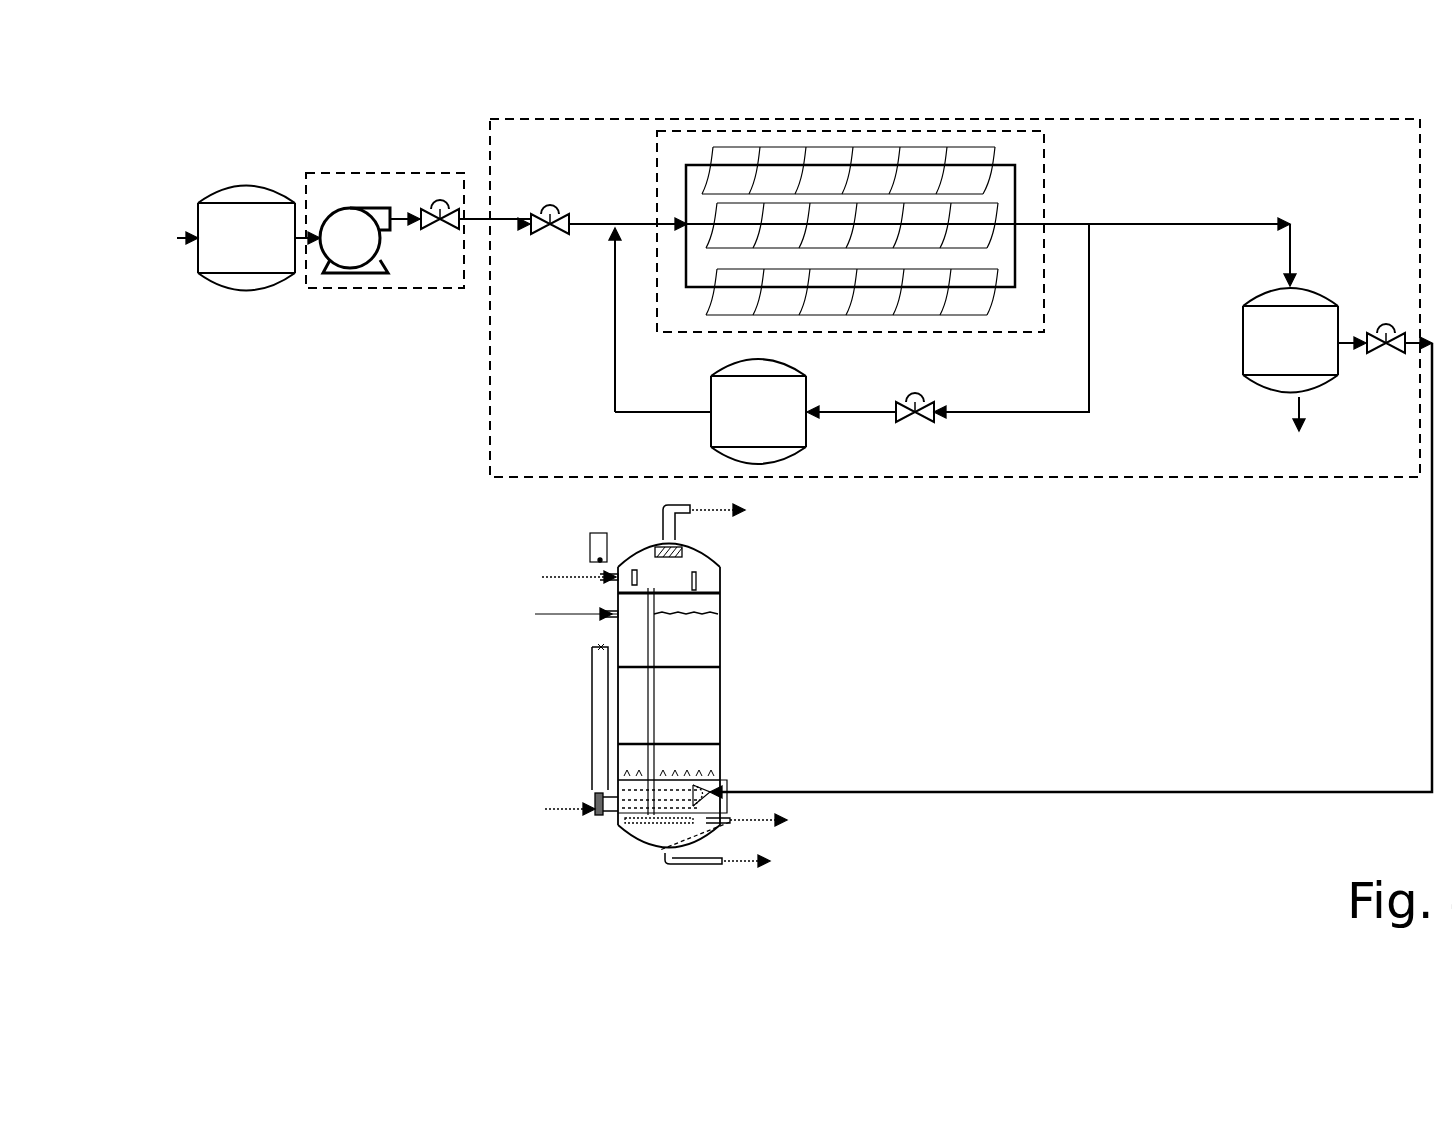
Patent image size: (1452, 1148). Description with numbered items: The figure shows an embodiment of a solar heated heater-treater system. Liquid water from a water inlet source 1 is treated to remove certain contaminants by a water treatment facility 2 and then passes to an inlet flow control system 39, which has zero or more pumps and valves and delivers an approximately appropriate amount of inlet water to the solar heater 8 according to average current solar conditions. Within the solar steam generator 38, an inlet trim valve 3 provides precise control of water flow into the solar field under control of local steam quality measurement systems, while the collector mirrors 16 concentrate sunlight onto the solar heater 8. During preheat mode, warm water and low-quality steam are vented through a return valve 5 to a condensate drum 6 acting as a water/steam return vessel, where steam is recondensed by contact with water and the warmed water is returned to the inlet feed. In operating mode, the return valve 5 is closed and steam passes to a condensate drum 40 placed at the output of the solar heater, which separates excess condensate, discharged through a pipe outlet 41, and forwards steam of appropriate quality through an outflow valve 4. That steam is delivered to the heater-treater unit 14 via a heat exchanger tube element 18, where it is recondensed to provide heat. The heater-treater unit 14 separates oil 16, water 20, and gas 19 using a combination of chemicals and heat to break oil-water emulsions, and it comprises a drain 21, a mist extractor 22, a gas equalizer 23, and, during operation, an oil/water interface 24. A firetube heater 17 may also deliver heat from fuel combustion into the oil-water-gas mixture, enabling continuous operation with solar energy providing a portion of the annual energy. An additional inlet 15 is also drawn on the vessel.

The water inlet source 1 is at (178, 230).
The water treatment facility 2 is at (228, 184).
The inlet trim valve 3 is at (544, 205).
The outflow valve 4 is at (1377, 320).
The return valve 5 is at (910, 390).
The condensate drum 6 is at (718, 364).
The solar heater 8 is at (654, 164).
The heater-treater unit 14 is at (641, 531).
The inlet 15 is at (580, 571).
The oil 16 is at (982, 191).
The firetube heater 17 is at (635, 797).
The heat exchanger tube element 18 is at (736, 789).
The gas 19 is at (719, 521).
The water 20 is at (720, 831).
The drain 21 is at (731, 862).
The mist extractor 22 is at (680, 549).
The gas equalizer 23 is at (700, 578).
The oil/water interface 24 is at (716, 773).
The solar steam generator 38 is at (486, 147).
The inlet flow control system 39 is at (306, 172).
The condensate drum 40 is at (1261, 286).
The pipe outlet 41 is at (1310, 422).